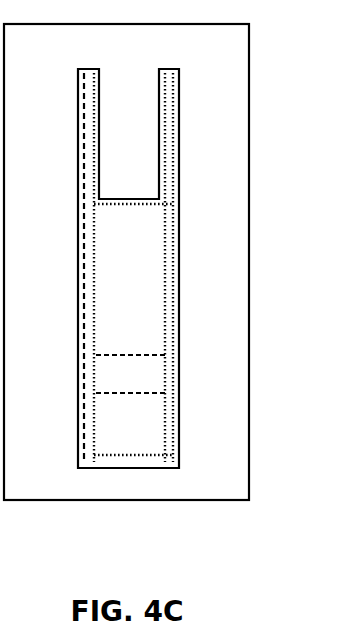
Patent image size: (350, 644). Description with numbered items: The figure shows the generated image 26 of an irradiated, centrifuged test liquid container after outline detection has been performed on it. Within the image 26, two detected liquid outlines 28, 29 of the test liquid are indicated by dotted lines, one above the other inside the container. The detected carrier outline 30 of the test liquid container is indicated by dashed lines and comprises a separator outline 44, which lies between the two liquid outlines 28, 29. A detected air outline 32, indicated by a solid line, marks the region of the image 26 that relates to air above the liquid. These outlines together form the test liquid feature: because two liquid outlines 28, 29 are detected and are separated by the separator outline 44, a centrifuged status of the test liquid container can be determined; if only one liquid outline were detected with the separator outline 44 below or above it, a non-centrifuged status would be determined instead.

The image 26 is at (248, 58).
The detected liquid outline 28 is at (95, 303).
The detected liquid outline 29 is at (93, 405).
The detected carrier outline 30 is at (78, 412).
The detected air outline 32 is at (180, 330).
The separator outline 44 is at (130, 358).